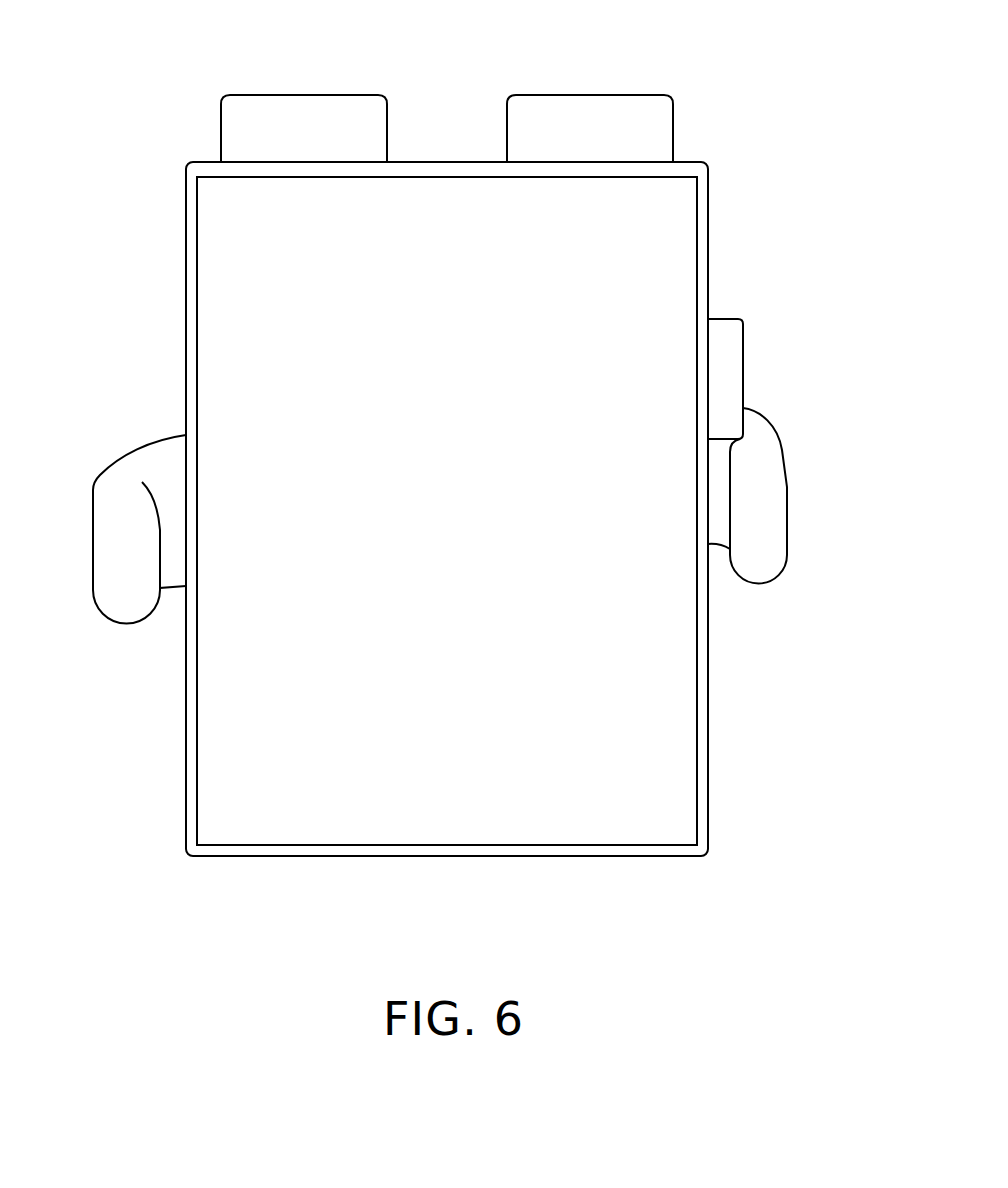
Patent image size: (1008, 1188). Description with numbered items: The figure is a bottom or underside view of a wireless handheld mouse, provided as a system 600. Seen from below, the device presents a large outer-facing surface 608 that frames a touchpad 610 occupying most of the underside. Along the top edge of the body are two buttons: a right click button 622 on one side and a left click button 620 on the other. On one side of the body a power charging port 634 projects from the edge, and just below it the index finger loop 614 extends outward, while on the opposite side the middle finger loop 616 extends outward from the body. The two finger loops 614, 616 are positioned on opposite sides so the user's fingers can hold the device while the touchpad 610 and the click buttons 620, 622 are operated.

The system 600 is at (78, 60).
The outer-facing surface 608 is at (228, 243).
The touchpad 610 is at (583, 733).
The right click button 622 is at (255, 120).
The left click button 620 is at (657, 117).
The power charging port 634 is at (732, 353).
The index finger loop 614 is at (780, 505).
The middle finger loop 616 is at (140, 453).